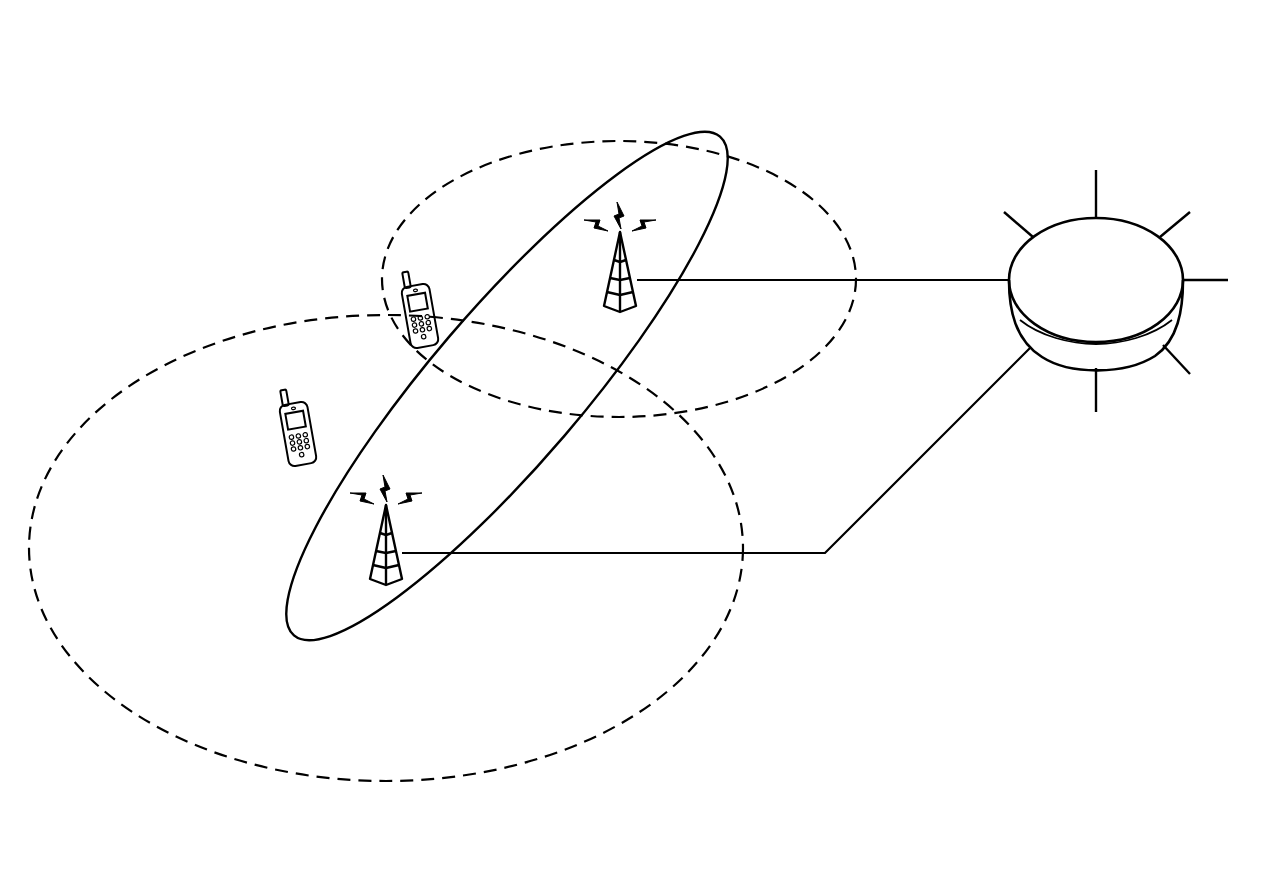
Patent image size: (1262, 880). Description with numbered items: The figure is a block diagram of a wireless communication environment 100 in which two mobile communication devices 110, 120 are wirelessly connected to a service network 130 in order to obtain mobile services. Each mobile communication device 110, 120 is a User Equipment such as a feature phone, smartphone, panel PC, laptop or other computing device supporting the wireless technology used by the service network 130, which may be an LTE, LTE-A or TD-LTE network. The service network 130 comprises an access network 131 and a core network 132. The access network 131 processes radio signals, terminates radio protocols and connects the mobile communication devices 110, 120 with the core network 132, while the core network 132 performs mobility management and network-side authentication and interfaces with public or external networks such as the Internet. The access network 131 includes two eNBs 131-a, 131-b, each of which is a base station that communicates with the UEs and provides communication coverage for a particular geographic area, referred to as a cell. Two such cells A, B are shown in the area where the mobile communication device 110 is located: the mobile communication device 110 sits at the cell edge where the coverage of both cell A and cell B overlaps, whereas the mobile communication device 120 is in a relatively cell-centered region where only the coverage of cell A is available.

The wireless communication environment 100 is at (1156, 773).
The mobile communication device 110 is at (408, 336).
The mobile communication device 120 is at (280, 446).
The service network 130 is at (710, 70).
The access network 131 is at (709, 137).
The eNB 131-a is at (374, 584).
The eNB 131-b is at (608, 304).
The core network 132 is at (1118, 328).
The cell A is at (226, 326).
The cell B is at (537, 142).